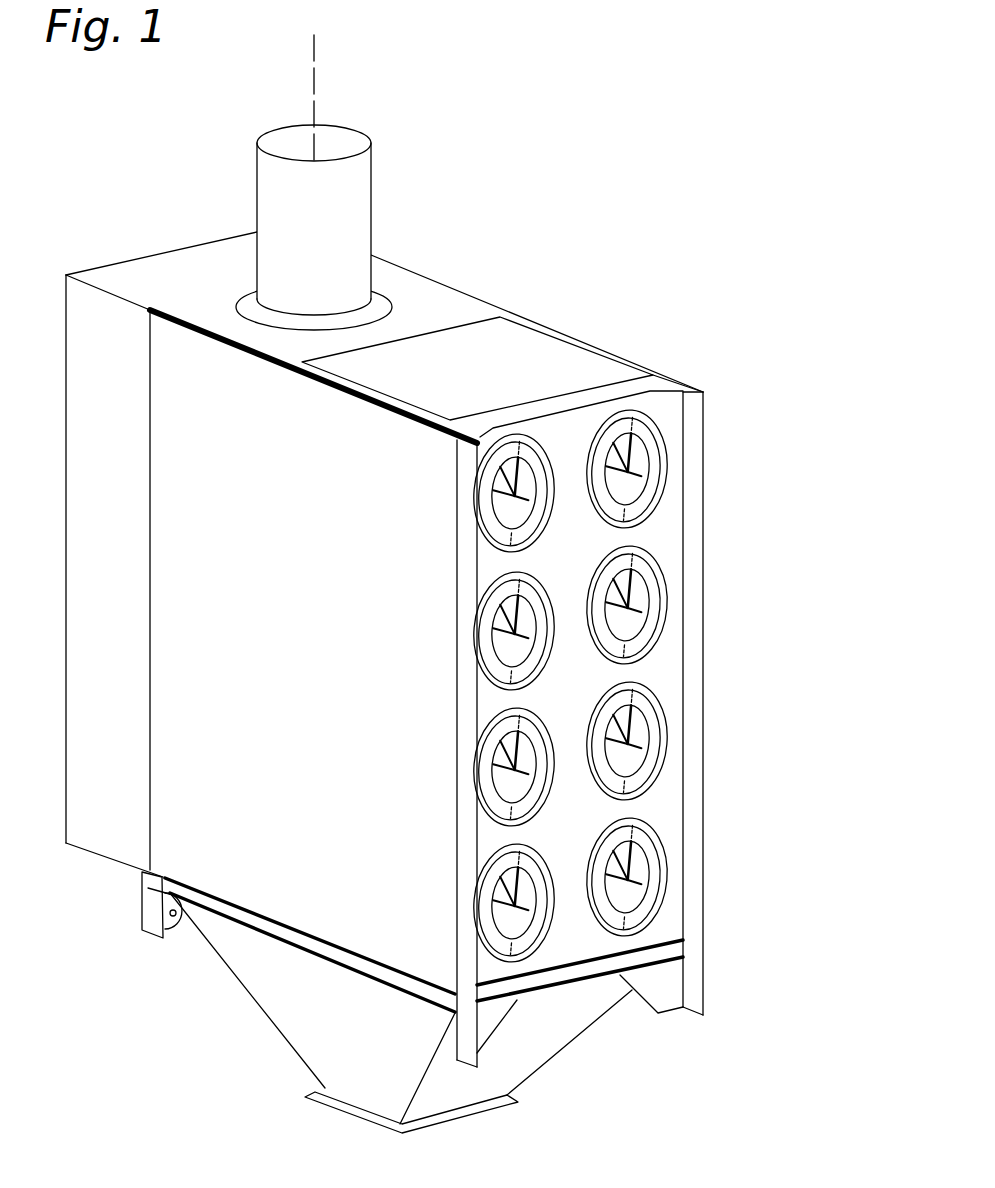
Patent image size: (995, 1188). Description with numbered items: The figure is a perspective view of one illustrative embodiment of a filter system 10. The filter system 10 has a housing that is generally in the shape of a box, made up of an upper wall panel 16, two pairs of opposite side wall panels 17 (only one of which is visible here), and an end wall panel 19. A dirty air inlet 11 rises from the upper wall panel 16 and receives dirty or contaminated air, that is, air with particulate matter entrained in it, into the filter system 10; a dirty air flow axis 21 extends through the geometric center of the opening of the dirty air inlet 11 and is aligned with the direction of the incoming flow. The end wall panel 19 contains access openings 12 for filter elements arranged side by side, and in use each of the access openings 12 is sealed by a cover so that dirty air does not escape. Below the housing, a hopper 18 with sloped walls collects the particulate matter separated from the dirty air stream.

The filter system 10 is at (602, 165).
The dirty air inlet 11 is at (356, 130).
The access openings 12 is at (528, 453).
The upper wall panel 16 is at (417, 300).
The side wall panels 17 is at (257, 860).
The hopper 18 is at (525, 1043).
The end wall panel 19 is at (660, 527).
The dirty air flow axis 21 is at (313, 110).